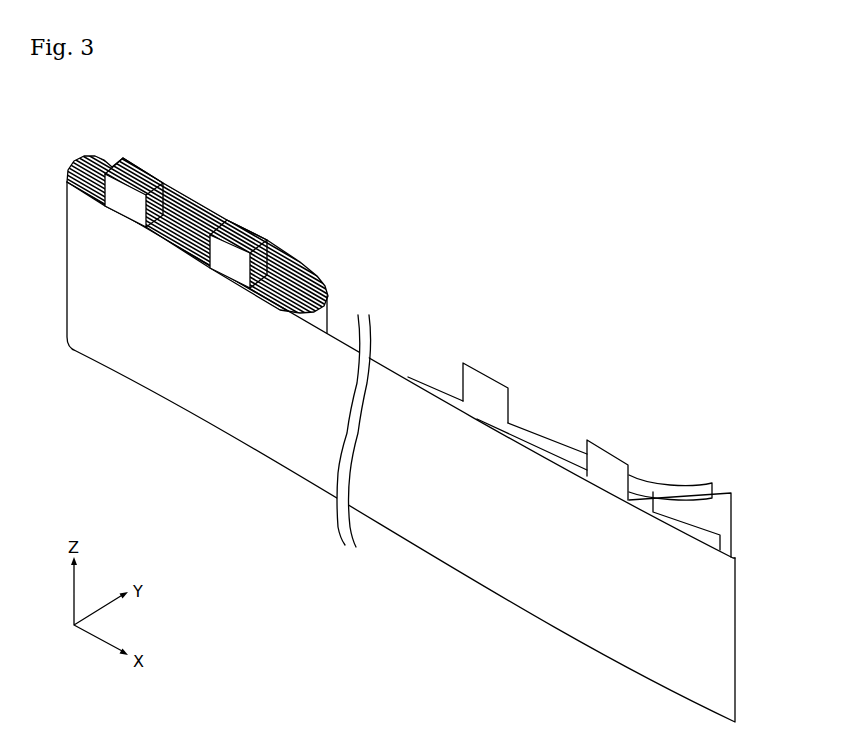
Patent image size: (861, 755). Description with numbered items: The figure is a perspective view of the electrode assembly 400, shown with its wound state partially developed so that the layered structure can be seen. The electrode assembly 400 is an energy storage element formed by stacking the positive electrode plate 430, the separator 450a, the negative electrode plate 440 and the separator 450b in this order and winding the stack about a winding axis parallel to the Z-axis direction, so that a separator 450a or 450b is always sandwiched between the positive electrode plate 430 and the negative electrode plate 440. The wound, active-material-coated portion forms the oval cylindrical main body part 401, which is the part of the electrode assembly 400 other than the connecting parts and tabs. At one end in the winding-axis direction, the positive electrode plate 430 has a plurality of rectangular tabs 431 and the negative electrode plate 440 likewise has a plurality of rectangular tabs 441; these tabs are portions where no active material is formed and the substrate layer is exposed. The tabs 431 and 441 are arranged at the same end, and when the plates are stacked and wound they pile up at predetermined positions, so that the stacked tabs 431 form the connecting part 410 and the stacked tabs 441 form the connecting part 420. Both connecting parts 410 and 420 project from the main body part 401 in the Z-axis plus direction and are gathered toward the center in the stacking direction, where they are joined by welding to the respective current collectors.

The electrode assembly 400 is at (653, 226).
The main body part 401 is at (192, 331).
The connecting part 410 is at (143, 170).
The connecting part 420 is at (247, 231).
The positive electrode plate 430 is at (543, 436).
The tab 431 is at (488, 374).
The negative electrode plate 440 is at (652, 512).
The tab 441 is at (607, 451).
The separator 450a is at (731, 493).
The separator 450b is at (683, 540).